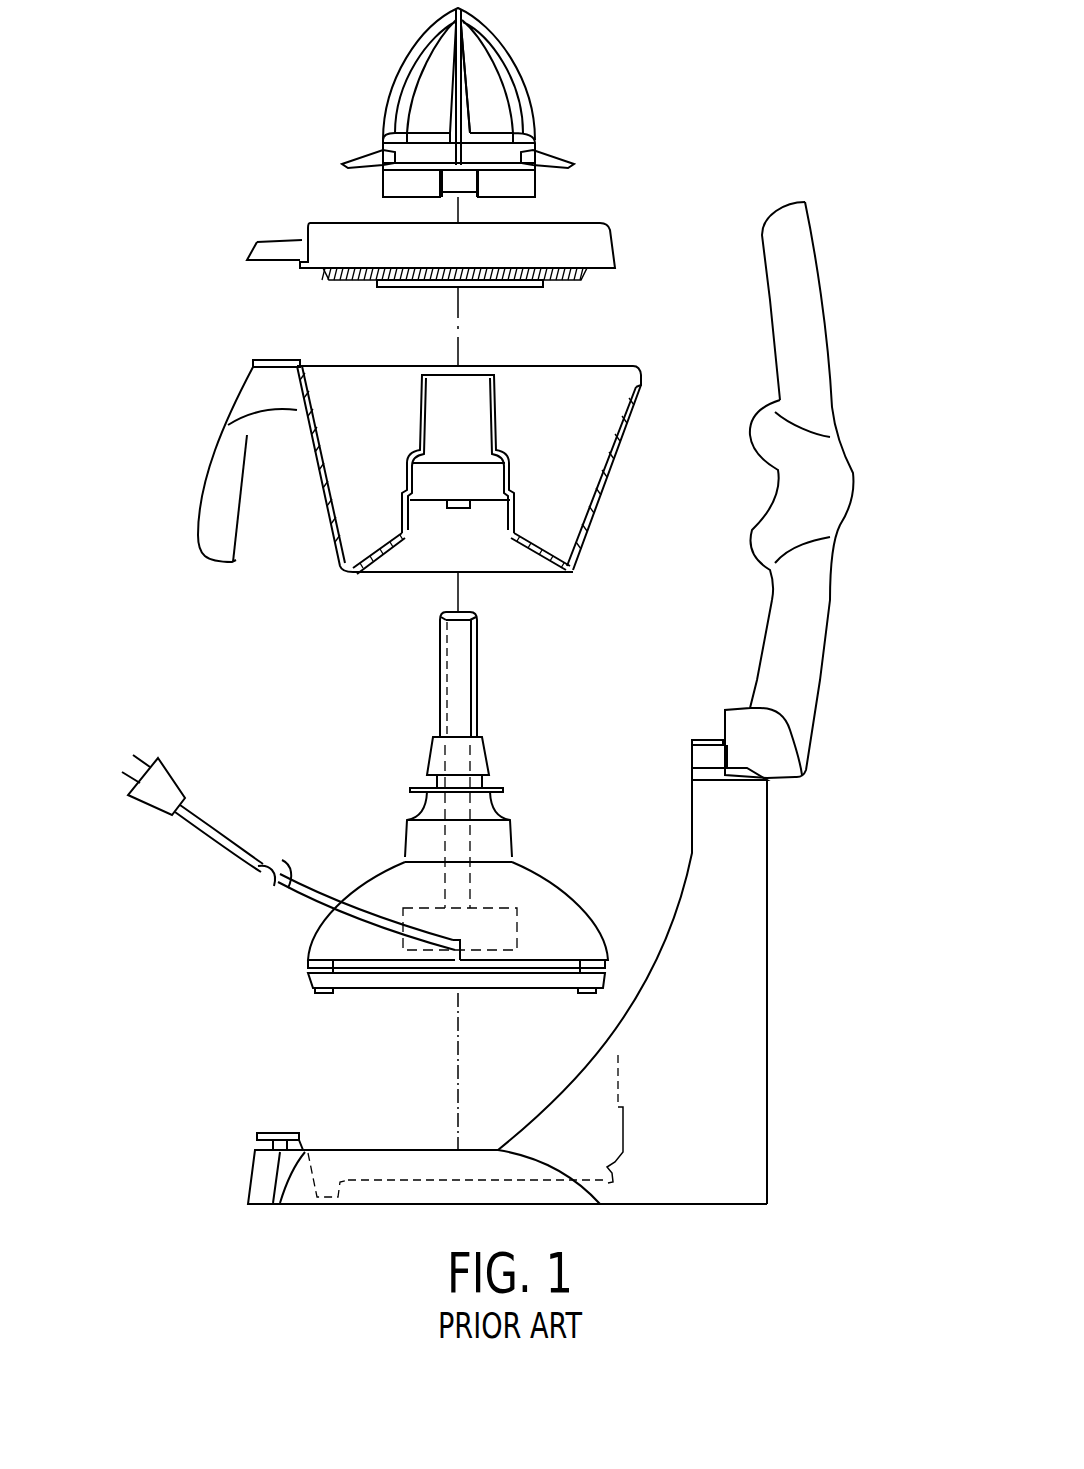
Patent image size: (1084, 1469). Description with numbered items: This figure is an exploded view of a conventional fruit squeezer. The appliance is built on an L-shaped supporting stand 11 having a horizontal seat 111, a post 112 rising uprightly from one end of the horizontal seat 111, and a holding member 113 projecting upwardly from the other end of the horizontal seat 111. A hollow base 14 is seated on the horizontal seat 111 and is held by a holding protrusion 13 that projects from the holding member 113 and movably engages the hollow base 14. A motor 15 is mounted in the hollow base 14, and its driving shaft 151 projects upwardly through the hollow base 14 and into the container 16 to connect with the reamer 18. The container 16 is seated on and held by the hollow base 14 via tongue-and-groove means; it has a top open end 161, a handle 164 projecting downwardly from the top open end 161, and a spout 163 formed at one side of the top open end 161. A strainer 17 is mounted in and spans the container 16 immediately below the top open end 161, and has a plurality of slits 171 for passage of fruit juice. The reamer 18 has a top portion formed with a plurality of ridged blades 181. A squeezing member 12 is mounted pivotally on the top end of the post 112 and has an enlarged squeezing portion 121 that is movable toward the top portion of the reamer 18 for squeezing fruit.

The supporting stand 11 is at (703, 1193).
The horizontal seat 111 is at (382, 1182).
The post 112 is at (755, 937).
The holding member 113 is at (280, 1138).
The squeezing member 12 is at (827, 405).
The enlarged squeezing portion 121 is at (840, 487).
The holding protrusion 13 is at (317, 1197).
The hollow base 14 is at (563, 920).
The motor 15 is at (490, 915).
The driving shaft 151 is at (472, 658).
The container 16 is at (603, 502).
The top open end 161 is at (585, 365).
The spout 163 is at (640, 402).
The handle 164 is at (220, 542).
The strainer 17 is at (610, 245).
The slits 171 is at (577, 282).
The reamer 18 is at (537, 110).
The ridged blades 181 is at (463, 67).